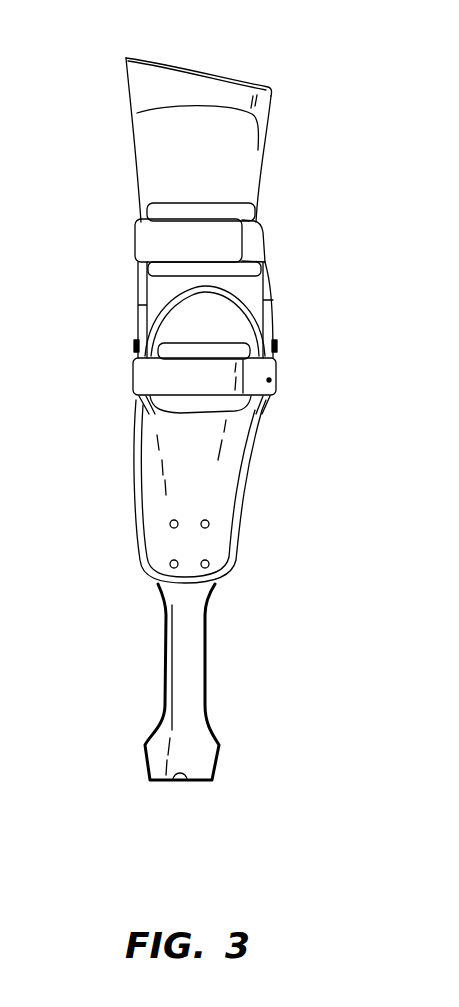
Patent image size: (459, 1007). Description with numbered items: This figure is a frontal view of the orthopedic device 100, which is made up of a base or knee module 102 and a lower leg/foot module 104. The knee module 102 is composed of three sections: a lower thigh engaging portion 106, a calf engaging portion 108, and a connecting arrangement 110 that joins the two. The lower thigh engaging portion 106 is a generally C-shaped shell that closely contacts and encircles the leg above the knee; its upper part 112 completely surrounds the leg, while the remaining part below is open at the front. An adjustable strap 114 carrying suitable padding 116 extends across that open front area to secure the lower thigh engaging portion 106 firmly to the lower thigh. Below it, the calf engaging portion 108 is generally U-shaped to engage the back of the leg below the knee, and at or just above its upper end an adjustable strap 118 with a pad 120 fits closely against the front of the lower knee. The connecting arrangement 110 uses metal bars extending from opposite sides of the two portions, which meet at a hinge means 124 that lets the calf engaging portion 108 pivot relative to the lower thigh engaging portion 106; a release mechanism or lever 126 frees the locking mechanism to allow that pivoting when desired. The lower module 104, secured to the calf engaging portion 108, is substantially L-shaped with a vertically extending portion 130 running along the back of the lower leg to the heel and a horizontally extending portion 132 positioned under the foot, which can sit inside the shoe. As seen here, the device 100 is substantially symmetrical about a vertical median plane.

The orthopedic device 100 is at (122, 293).
The knee module 102 is at (273, 352).
The lower leg/foot module 104 is at (206, 665).
The lower thigh engaging portion 106 is at (232, 141).
The calf engaging portion 108 is at (240, 487).
The connecting arrangement 110 is at (136, 319).
The upper part 112 is at (198, 93).
The adjustable strap 114 is at (232, 238).
The padding 116 is at (252, 267).
The adjustable strap 118 is at (143, 377).
The pad 120 is at (262, 408).
The hinge means 124 is at (132, 347).
The release mechanism or lever 126 is at (264, 312).
The vertically extending portion 130 is at (167, 651).
The horizontally extending portion 132 is at (176, 783).